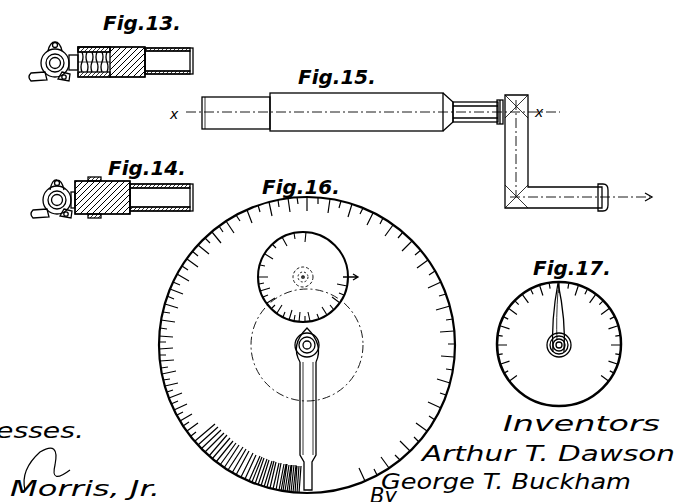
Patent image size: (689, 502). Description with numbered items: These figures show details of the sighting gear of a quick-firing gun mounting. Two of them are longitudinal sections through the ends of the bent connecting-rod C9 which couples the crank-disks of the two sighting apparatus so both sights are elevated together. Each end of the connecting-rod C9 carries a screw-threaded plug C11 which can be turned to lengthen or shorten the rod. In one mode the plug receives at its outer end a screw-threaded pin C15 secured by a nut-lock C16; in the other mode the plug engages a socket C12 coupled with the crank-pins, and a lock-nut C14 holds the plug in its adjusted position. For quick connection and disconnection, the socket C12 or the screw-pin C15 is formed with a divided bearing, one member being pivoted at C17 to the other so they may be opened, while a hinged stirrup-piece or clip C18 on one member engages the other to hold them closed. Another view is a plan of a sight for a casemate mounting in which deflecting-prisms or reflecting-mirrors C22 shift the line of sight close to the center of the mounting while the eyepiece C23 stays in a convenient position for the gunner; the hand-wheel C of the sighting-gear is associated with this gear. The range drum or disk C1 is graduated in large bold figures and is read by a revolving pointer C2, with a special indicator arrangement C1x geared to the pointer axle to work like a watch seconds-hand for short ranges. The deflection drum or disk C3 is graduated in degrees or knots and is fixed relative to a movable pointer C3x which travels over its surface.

In FIG. 13, the bent connecting-rod C9 is at (169, 61).
In FIG. 14, the bent connecting-rod C9 is at (161, 197).
In FIG. 13, the screw-threaded plug C11 is at (116, 78).
In FIG. 14, the screw-threaded plug C11 is at (112, 215).
In FIG. 13, the screw-threaded pin C15 is at (79, 77).
In FIG. 13, the nut-lock C16 is at (100, 46).
In FIG. 13, the pivot C17 is at (53, 41).
In FIG. 14, the pivot C17 is at (43, 195).
In FIG. 13, the hinged stirrup-piece or clip C18 is at (49, 81).
In FIG. 14, the hinged stirrup-piece or clip C18 is at (51, 218).
In FIG. 14, the socket C12 is at (57, 180).
In FIG. 14, the lock-nut C14 is at (93, 178).
In FIG. 15, the hand-wheel of the sighting-gear C is at (336, 107).
In FIG. 15, the deflecting-prisms or reflecting-mirrors C22 is at (528, 89).
In FIG. 15, the eyepiece C23 is at (608, 187).
In FIG. 16, the range drum or disk C1 is at (307, 345).
In FIG. 16, the special indicator arrangement C1x is at (325, 277).
In FIG. 16, the pointer C2 is at (311, 405).
In FIG. 17, the deflection drum or disk C3 is at (559, 344).
In FIG. 17, the movable pointer C3x is at (554, 318).